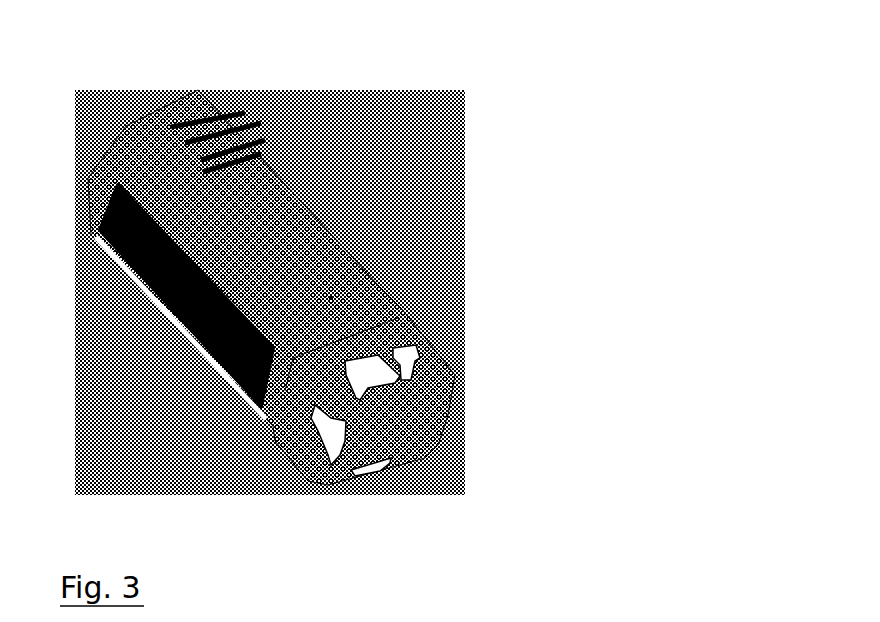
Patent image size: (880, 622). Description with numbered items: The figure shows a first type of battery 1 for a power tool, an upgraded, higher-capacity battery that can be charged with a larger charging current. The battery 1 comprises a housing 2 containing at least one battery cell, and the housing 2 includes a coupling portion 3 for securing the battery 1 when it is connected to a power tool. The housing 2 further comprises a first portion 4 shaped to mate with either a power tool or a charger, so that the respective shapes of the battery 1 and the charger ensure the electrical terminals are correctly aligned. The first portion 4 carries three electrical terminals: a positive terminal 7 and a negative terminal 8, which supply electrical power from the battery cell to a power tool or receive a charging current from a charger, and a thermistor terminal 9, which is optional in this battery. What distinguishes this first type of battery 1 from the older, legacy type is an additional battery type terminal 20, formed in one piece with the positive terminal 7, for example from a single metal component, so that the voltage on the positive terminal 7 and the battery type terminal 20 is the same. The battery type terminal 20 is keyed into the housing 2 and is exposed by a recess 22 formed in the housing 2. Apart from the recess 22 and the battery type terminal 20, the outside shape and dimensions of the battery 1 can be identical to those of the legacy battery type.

The battery 1 is at (359, 169).
The housing 2 is at (310, 267).
The coupling portion 3 is at (223, 138).
The first portion 4 is at (497, 294).
The positive terminal 7 is at (366, 370).
The negative terminal 8 is at (378, 458).
The thermistor terminal 9 is at (318, 432).
The battery type terminal 20 is at (409, 357).
The recess 22 is at (408, 349).